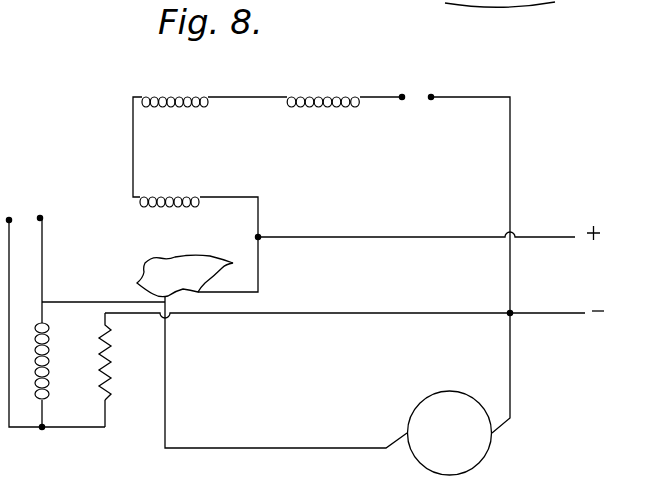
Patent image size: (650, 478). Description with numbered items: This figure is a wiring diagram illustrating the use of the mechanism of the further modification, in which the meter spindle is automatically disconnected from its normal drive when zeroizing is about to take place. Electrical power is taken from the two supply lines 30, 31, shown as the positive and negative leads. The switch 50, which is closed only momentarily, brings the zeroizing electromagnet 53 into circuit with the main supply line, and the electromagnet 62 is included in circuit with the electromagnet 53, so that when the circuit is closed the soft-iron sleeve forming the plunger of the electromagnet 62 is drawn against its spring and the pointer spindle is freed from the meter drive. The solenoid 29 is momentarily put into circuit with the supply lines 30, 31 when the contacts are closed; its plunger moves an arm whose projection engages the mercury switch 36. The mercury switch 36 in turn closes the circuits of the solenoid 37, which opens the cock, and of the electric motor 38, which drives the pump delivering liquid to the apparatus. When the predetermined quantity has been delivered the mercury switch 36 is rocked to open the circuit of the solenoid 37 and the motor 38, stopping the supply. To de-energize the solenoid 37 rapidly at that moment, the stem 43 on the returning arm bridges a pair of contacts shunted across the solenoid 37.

The electromagnet 62 is at (183, 95).
The electromagnet 53 is at (326, 105).
The switch 50 is at (406, 99).
The solenoid 29 is at (179, 196).
The mercury switch 36 is at (192, 263).
The stem 43 is at (24, 211).
The solenoid 37 is at (50, 365).
The supply line 30 is at (564, 231).
The supply line 31 is at (553, 314).
The electric motor 38 is at (450, 433).